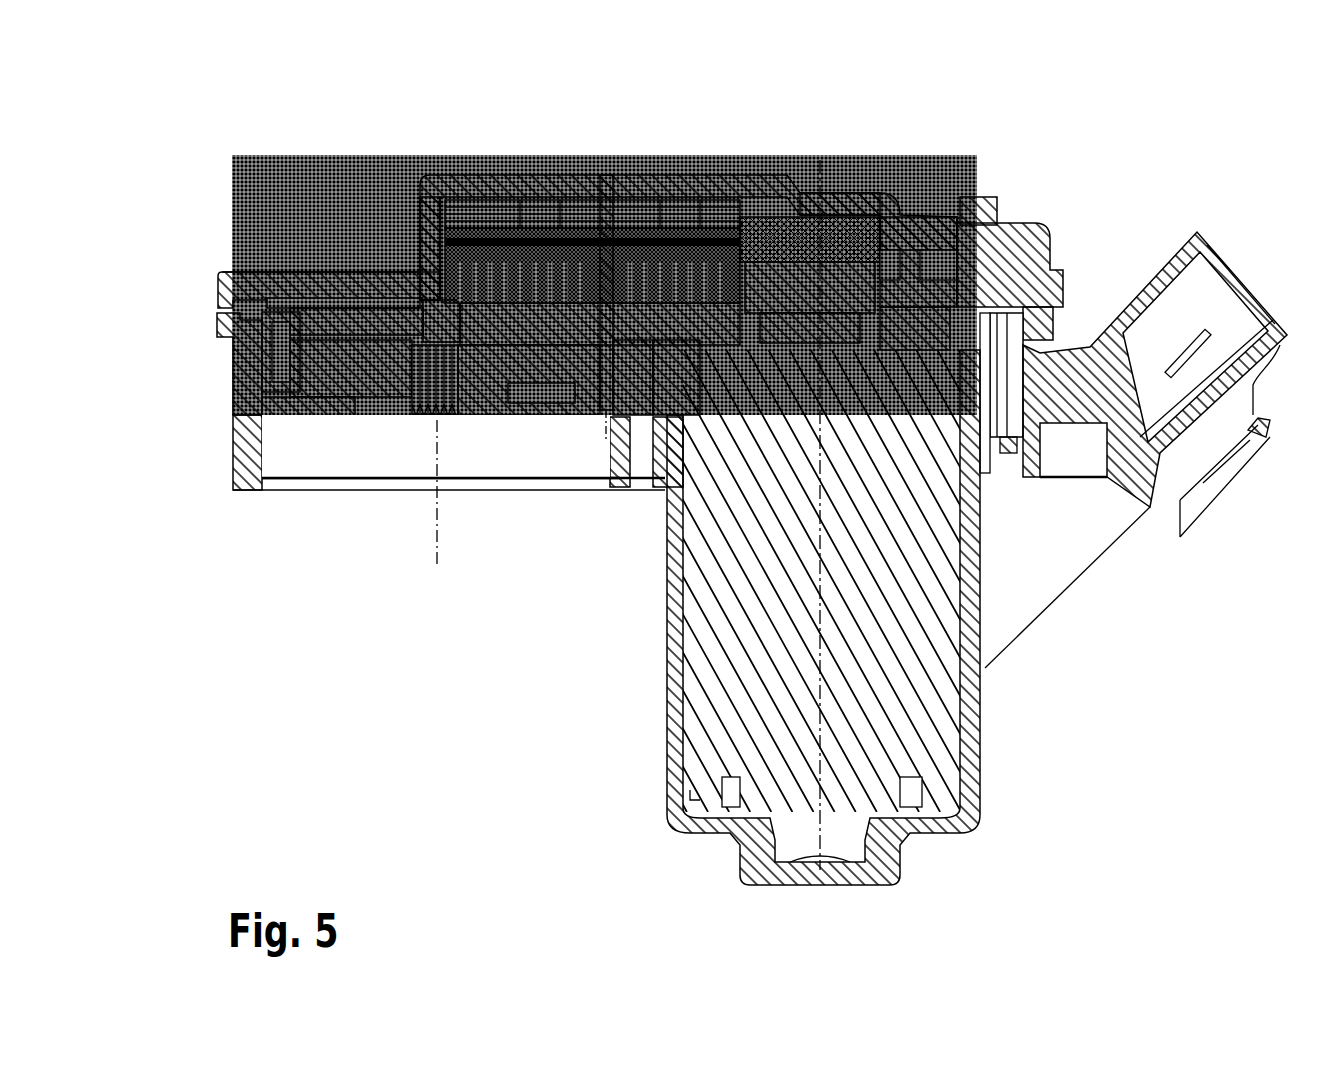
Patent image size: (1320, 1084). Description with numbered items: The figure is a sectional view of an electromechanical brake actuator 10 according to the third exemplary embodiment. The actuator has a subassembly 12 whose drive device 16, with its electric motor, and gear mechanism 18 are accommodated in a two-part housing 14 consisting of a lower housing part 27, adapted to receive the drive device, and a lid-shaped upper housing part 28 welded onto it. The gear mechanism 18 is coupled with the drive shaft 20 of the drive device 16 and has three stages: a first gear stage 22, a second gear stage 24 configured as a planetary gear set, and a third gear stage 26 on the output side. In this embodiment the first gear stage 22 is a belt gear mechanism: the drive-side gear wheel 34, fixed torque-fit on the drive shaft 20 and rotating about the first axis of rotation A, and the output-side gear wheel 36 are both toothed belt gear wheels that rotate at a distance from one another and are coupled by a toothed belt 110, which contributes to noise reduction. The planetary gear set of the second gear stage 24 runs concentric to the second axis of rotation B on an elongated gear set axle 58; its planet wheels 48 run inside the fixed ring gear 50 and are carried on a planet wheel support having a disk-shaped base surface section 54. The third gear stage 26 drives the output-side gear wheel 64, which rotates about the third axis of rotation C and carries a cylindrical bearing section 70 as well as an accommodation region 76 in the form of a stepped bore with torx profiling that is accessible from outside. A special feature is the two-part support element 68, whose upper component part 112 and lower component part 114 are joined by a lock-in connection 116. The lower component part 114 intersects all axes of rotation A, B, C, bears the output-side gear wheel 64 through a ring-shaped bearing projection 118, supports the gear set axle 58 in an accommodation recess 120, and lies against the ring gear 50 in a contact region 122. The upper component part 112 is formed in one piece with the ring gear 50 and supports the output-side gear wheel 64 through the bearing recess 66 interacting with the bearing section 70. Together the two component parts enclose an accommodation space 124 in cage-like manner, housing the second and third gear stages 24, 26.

The electromechanical brake actuator 10 is at (1203, 72).
The subassembly 12 is at (938, 72).
The housing 14 is at (192, 298).
The drive device 16 is at (725, 705).
The gear mechanism 18 is at (497, 105).
The drive shaft 20 is at (830, 215).
The first gear stage 22 is at (795, 105).
The second gear stage 24 is at (600, 105).
The third gear stage 26 is at (535, 512).
The lower housing part 27 is at (240, 356).
The upper housing part 28 is at (232, 274).
The drive-side gear wheel 34 is at (882, 215).
The output-side gear wheel of the first gear stage 36 is at (703, 215).
The planet wheels 48 is at (502, 215).
The ring gear 50 is at (748, 230).
The base surface section 54 is at (478, 200).
The gear set axle 58 is at (603, 177).
The output-side gear wheel of the third gear stage 64 is at (385, 398).
The bearing recess 66 is at (410, 285).
The support element 68 is at (335, 300).
The bearing section 70 is at (362, 308).
The accommodation region 76 is at (413, 437).
The toothed belt 110 is at (436, 215).
The upper component part 112 is at (305, 272).
The lower component part 114 is at (280, 405).
The lock-in connection 116 is at (263, 368).
The ring-shaped bearing projection 118 is at (352, 400).
The accommodation recess 120 is at (604, 412).
The contact region 122 is at (718, 358).
The accommodation space 124 is at (536, 400).
The first axis of rotation A is at (818, 205).
The second axis of rotation B is at (610, 172).
The third axis of rotation C is at (428, 508).